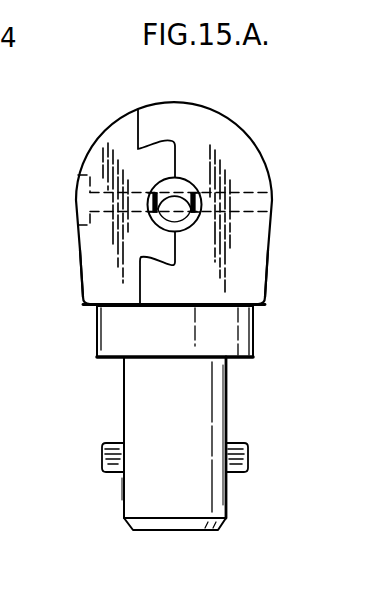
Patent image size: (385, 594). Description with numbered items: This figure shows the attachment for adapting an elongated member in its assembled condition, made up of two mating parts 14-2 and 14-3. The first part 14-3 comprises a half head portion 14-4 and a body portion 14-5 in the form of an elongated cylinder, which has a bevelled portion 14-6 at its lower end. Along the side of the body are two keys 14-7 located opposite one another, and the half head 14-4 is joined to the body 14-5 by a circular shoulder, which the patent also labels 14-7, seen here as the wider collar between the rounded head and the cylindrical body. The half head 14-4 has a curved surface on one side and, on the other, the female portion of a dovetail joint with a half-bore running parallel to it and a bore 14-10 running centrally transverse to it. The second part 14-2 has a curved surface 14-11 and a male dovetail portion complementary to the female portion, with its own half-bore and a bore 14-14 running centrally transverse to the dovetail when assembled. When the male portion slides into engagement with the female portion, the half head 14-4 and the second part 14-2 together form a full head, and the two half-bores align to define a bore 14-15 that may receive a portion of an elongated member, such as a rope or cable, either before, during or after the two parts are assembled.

The first part 14-3 is at (299, 172).
The curved surface 14-11 is at (90, 129).
The bore 14-10 is at (249, 193).
The bore 14-15 is at (176, 201).
The bore 14-14 is at (76, 192).
The half head portion 14-4 is at (276, 250).
The second part 14-2 is at (68, 252).
The keys 14-7 is at (263, 330).
The body portion 14-5 is at (237, 404).
The bevelled portion 14-6 is at (231, 527).